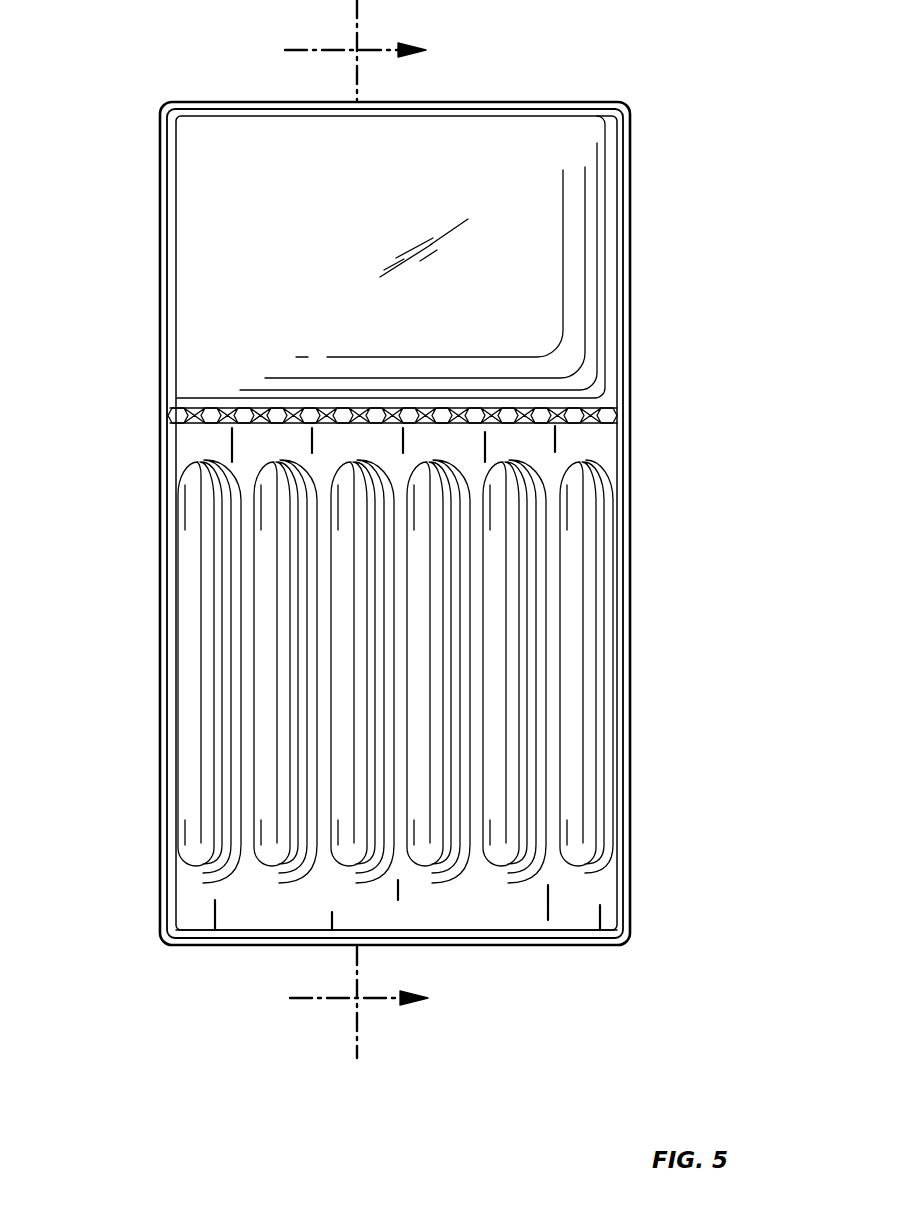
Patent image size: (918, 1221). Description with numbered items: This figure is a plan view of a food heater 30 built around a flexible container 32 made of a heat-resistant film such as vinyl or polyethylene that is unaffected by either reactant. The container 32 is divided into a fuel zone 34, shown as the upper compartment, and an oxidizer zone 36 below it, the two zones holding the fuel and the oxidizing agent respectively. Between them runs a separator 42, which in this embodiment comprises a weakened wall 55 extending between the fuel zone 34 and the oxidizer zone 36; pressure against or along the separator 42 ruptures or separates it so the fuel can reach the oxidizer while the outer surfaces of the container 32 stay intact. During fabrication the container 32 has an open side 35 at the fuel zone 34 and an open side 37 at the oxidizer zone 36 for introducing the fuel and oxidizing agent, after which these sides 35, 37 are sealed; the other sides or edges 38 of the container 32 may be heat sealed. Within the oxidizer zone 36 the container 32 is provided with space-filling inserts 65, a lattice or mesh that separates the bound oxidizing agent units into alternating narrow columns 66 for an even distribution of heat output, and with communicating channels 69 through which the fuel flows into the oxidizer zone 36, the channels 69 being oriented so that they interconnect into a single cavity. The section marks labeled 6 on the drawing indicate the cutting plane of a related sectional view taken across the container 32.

The food heater 30 is at (688, 236).
The flexible container 32 is at (728, 589).
The fuel zone 34 is at (211, 296).
The open end or side 35 is at (160, 213).
The oxidizer zone 36 is at (398, 738).
The open end or side 37 is at (586, 945).
The other sides or edges 38 is at (632, 517).
The separator 42 is at (555, 412).
The weakened wall 55 is at (248, 410).
The space-filling inserts 65 is at (542, 735).
The narrow columns 66 is at (323, 863).
The communicating channels 69 is at (188, 478).
The section line 6- 6 is at (375, 529).